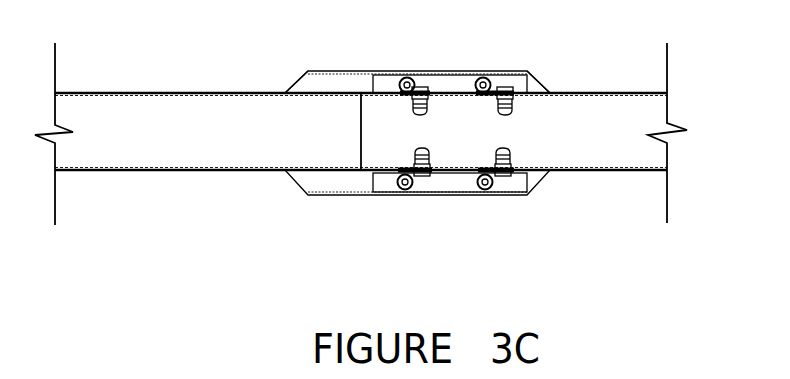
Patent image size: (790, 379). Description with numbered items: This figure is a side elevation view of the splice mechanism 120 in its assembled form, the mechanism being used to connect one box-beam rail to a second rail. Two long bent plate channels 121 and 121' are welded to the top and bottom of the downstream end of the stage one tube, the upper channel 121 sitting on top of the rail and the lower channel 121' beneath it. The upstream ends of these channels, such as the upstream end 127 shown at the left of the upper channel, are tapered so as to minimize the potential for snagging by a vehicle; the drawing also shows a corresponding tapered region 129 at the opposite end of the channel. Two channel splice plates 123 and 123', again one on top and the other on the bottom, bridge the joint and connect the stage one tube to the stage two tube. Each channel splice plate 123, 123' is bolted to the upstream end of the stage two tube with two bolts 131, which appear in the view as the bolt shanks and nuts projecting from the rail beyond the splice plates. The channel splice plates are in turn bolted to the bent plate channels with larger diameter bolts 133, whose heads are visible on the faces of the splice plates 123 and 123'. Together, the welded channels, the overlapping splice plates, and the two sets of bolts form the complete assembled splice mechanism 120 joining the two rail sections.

The splice mechanism 120 is at (361, 145).
The bent plate channel 121 is at (417, 66).
The bent plate channel 121' is at (417, 201).
The channel splice plate 123 is at (450, 66).
The channel splice plate 123' is at (450, 203).
The upstream end of channel 127 is at (279, 66).
The right tapered end of splice plate 129 is at (558, 66).
The bolt 131 is at (490, 131).
The bolt 133 is at (489, 136).